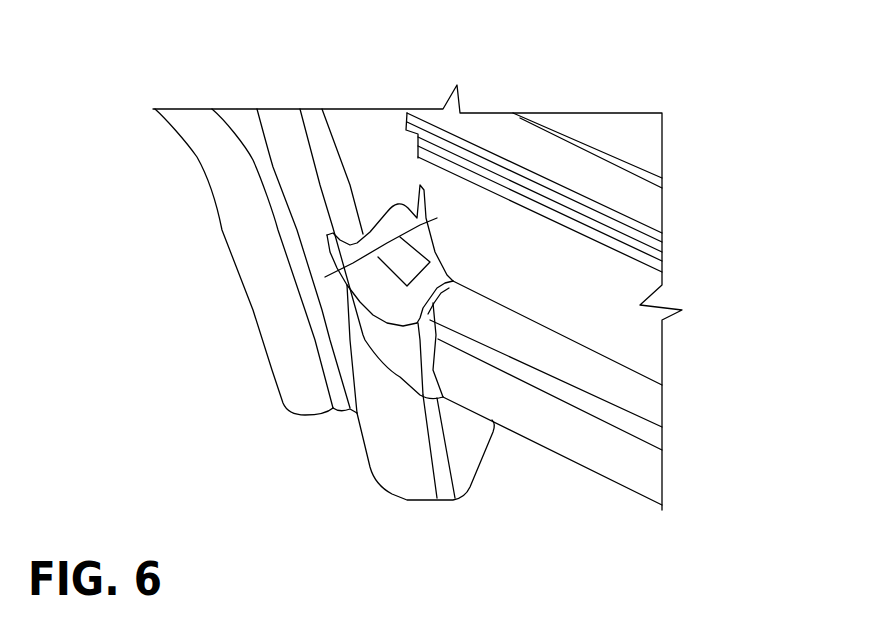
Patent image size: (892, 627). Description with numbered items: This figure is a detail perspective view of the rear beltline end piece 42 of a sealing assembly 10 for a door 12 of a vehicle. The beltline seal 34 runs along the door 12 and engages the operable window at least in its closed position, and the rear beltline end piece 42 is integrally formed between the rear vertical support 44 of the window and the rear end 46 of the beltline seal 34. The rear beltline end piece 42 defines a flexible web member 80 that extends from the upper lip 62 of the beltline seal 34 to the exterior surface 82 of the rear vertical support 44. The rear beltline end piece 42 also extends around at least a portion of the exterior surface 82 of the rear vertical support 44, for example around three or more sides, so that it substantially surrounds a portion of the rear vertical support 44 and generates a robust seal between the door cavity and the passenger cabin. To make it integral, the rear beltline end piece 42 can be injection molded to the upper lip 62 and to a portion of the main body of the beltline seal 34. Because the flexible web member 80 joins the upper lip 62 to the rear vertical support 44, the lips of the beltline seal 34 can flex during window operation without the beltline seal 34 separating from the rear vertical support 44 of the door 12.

The sealing assembly 10 is at (508, 477).
The door 12 is at (330, 95).
The beltline seal 34 is at (612, 367).
The rear beltline end piece 42 is at (378, 297).
The rear vertical support 44 is at (345, 190).
The rear end 46 is at (433, 347).
The upper lip 62 is at (547, 263).
The flexible web member 80 is at (325, 277).
The exterior surface 82 is at (383, 168).